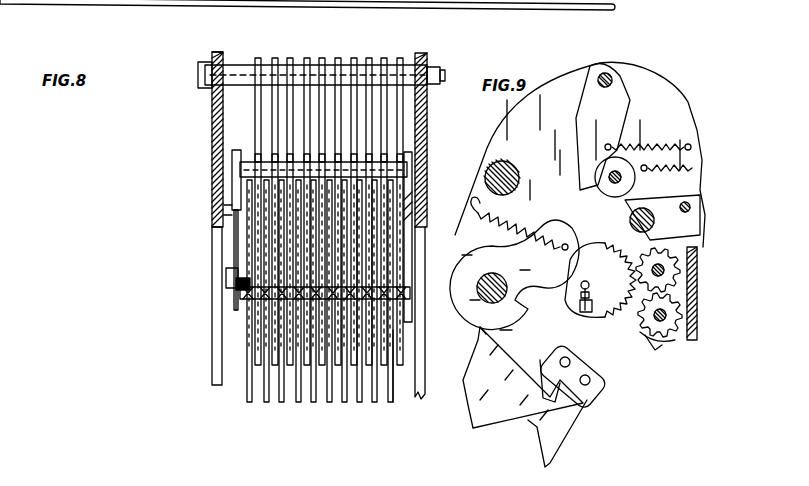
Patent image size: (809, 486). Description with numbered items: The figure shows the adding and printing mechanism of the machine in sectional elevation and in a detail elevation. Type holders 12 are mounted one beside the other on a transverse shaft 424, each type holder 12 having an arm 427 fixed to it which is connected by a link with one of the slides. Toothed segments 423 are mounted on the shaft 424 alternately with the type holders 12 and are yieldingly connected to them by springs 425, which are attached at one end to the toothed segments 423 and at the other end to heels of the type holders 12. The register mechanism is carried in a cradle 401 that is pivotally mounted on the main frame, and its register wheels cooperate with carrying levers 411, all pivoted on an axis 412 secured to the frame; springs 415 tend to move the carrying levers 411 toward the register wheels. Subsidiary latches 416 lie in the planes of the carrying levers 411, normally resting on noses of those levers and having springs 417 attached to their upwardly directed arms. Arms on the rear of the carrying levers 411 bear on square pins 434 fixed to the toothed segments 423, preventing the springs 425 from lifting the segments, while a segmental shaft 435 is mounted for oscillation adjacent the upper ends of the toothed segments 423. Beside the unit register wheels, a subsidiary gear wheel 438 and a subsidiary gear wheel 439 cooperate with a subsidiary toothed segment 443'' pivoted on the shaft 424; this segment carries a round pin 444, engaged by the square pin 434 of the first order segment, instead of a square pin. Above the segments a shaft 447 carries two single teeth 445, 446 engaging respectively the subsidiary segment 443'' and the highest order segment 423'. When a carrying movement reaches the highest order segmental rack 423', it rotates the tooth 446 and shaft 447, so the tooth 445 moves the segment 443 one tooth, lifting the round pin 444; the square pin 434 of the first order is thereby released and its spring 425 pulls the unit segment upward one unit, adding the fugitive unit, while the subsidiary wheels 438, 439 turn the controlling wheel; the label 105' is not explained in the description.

In FIG. 8, the rod 105' is at (307, 11).
In FIG. 8, the carrying lever 411 is at (339, 58).
In FIG. 9, the carrying lever 411 is at (593, 90).
In FIG. 8, the axis 412 is at (243, 70).
In FIG. 9, the axis 412 is at (612, 76).
In FIG. 9, the spring 415 is at (658, 145).
In FIG. 9, the subsidiary latch 416 is at (690, 172).
In FIG. 9, the spring 417 is at (672, 200).
In FIG. 8, the toothed segment 423 is at (353, 307).
In FIG. 9, the toothed segment 423 is at (462, 353).
In FIG. 8, the highest order tooth segment 423' is at (389, 383).
In FIG. 8, the shaft 424 is at (235, 277).
In FIG. 9, the shaft 424 is at (480, 298).
In FIG. 9, the spring 425 is at (515, 223).
In FIG. 9, the arm 427 is at (596, 399).
In FIG. 8, the pin 434 is at (242, 292).
In FIG. 9, the pin 434 is at (586, 306).
In FIG. 9, the segmental shaft 435 is at (497, 165).
In FIG. 9, the subsidiary gear wheel 438 is at (660, 367).
In FIG. 9, the subsidiary gear wheel 439 is at (676, 262).
In FIG. 9, the cradle 401 is at (690, 345).
In FIG. 9, the subsidiary segment 443 is at (595, 313).
In FIG. 8, the subsidiary toothed segment 443'' is at (202, 216).
In FIG. 8, the round pin 444 is at (238, 283).
In FIG. 9, the round pin 444 is at (595, 278).
In FIG. 8, the tooth 445 is at (237, 186).
In FIG. 9, the tooth 445 is at (598, 170).
In FIG. 8, the tooth 446 is at (407, 162).
In FIG. 8, the shaft 447 is at (258, 165).
In FIG. 9, the shaft 447 is at (612, 172).
In FIG. 9, the type holder 12 is at (504, 418).